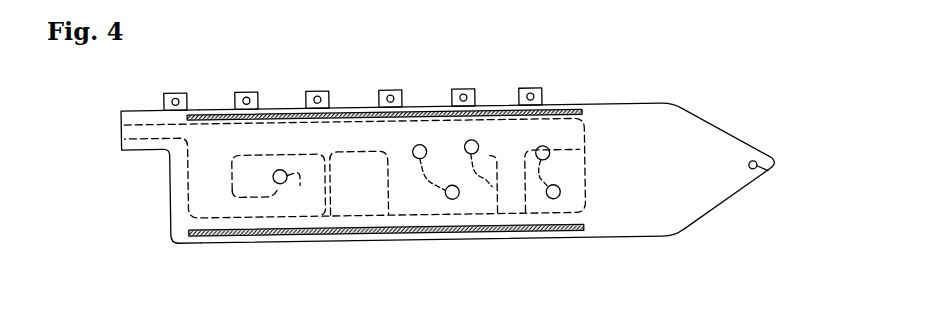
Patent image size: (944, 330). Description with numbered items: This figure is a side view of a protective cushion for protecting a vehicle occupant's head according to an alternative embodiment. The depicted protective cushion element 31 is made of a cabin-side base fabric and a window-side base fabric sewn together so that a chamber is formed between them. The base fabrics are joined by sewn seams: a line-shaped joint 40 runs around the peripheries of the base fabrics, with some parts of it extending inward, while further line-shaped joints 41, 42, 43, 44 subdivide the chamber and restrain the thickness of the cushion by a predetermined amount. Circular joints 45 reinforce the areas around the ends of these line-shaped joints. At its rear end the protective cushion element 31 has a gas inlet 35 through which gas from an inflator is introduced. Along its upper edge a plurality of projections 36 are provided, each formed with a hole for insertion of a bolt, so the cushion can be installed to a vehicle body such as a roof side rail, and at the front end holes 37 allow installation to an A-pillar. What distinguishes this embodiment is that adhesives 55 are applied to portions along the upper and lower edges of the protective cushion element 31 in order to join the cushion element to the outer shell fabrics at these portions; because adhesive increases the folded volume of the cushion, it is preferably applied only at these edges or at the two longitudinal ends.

The protective cushion element 31 is at (688, 99).
The gas inlet 35 is at (122, 133).
The projections 36 is at (466, 90).
The holes 37 is at (769, 174).
The line-shaped joint 40 is at (188, 182).
The line-shaped joint 41 is at (258, 156).
The line-shaped joint 42 is at (423, 180).
The line-shaped joint 43 is at (480, 151).
The line-shaped joint 44 is at (530, 217).
The circular joints 45 is at (606, 189).
The adhesives 55 is at (290, 108).